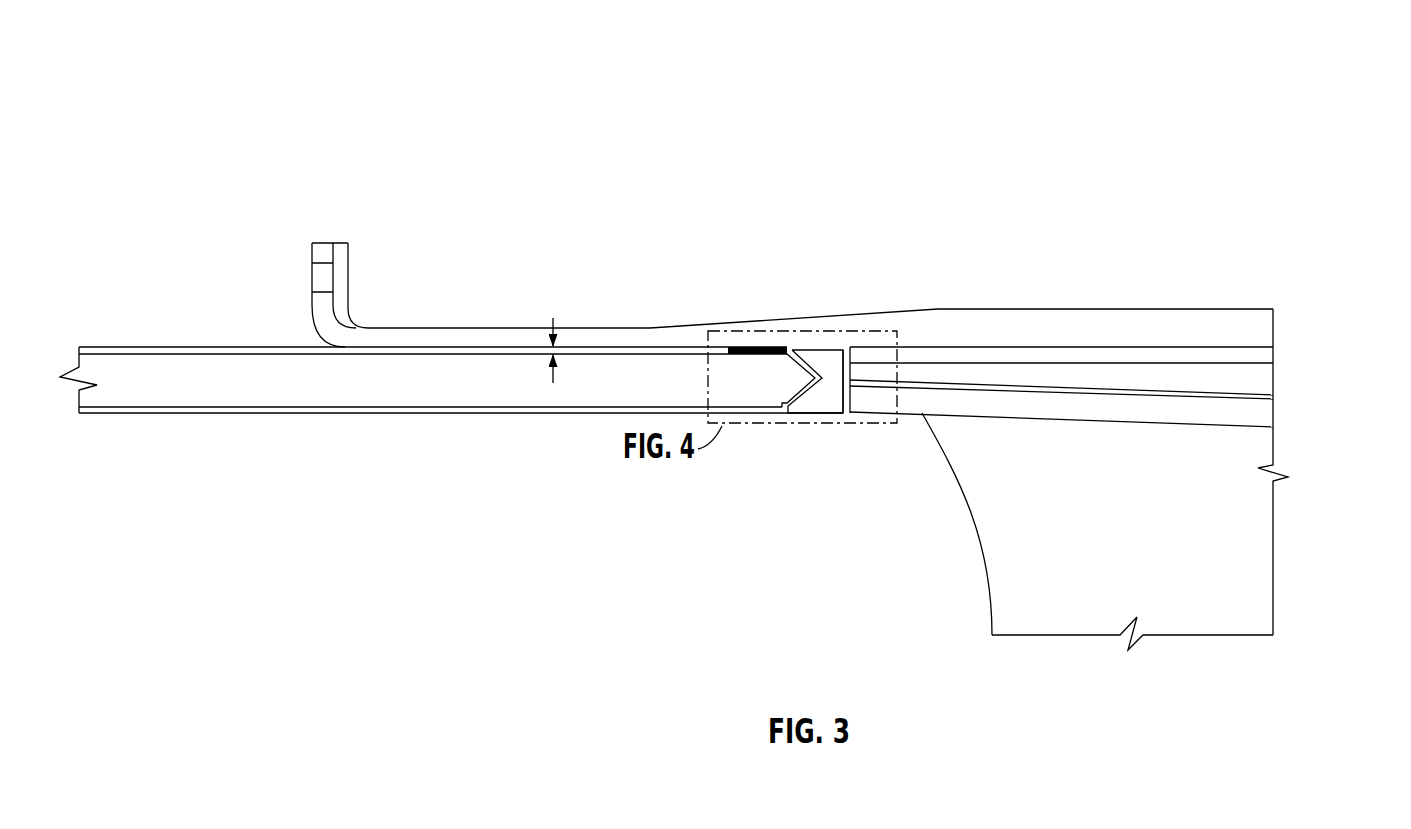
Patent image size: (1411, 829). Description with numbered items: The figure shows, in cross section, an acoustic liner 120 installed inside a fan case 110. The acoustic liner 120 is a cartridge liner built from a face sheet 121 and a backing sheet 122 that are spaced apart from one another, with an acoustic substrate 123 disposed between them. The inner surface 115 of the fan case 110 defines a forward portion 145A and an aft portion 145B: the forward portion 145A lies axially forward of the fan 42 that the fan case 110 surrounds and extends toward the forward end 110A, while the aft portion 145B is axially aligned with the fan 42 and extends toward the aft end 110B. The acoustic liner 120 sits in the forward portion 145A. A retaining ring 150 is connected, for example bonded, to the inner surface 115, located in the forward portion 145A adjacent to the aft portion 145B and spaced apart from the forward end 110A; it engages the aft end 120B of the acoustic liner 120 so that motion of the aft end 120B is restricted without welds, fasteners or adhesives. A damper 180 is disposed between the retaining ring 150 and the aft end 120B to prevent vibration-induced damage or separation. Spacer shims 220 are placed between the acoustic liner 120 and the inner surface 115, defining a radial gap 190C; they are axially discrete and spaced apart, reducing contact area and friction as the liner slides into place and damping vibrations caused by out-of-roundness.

The fan 42 is at (980, 542).
The fan case 110 is at (800, 429).
The forward end of the fan case 110A is at (312, 246).
The aft end of the fan case 110B is at (1284, 328).
The inner surface of the fan case 115 is at (1108, 322).
The acoustic liner 120 is at (451, 370).
The aft end of the acoustic liner 120B is at (760, 377).
The face sheet 121 is at (465, 414).
The backing sheet 122 is at (252, 346).
The acoustic substrate 123 is at (288, 396).
The forward portion of the fan case 145A is at (639, 146).
The aft portion of the fan case 145B is at (1067, 124).
The retaining ring 150 is at (851, 399).
The damper 180 is at (808, 361).
The radial gap 190C is at (573, 303).
The spacer shims 220 is at (397, 346).